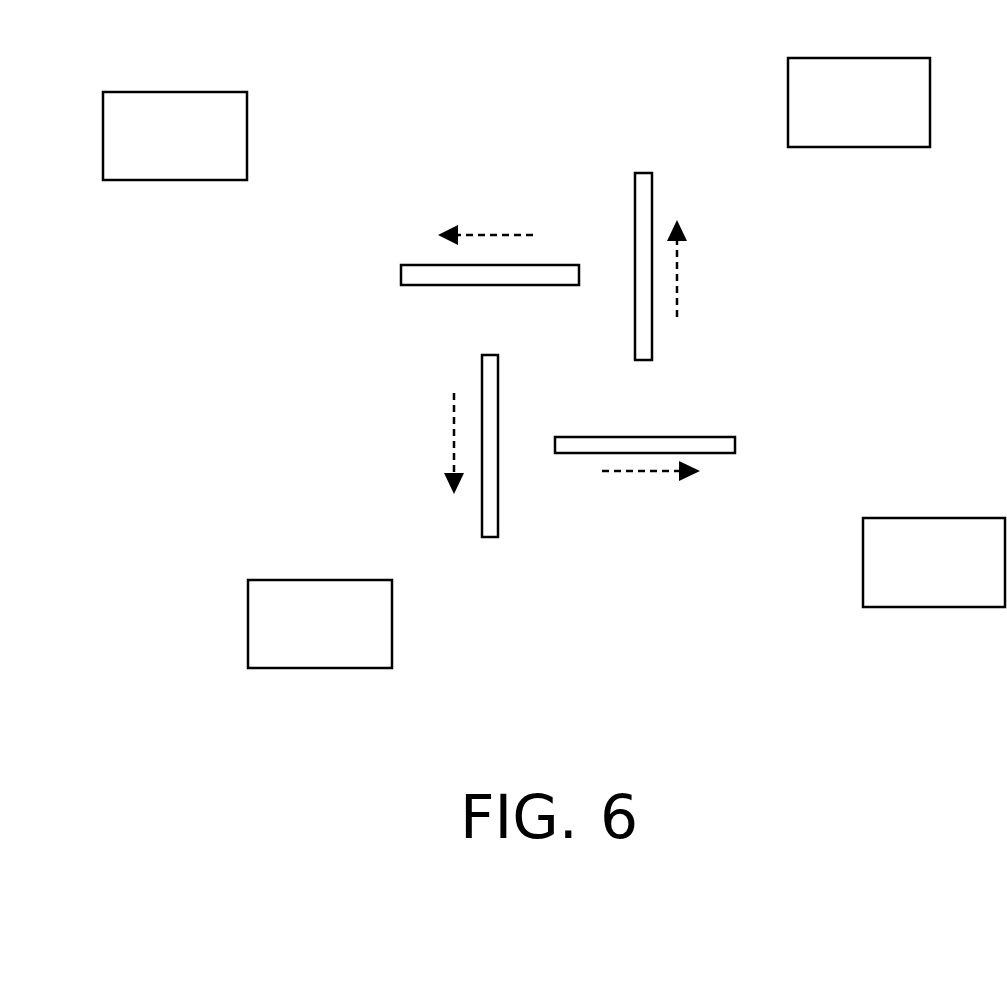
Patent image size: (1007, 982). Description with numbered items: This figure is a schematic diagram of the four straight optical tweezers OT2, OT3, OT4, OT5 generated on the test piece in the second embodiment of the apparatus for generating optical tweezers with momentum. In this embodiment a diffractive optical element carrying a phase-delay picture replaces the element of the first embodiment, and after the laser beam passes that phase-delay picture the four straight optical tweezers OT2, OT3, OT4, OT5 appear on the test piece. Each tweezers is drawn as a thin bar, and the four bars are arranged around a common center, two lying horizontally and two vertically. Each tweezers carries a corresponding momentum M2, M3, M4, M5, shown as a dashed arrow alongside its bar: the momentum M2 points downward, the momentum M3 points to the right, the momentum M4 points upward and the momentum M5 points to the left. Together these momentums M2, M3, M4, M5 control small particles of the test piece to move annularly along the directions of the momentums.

The momentum M2 is at (423, 446).
The momentum M3 is at (645, 503).
The momentum M4 is at (716, 266).
The momentum M5 is at (490, 207).
The optical tweezers OT2 is at (470, 522).
The optical tweezers OT3 is at (750, 465).
The optical tweezers OT4 is at (675, 175).
The optical tweezers OT5 is at (383, 263).